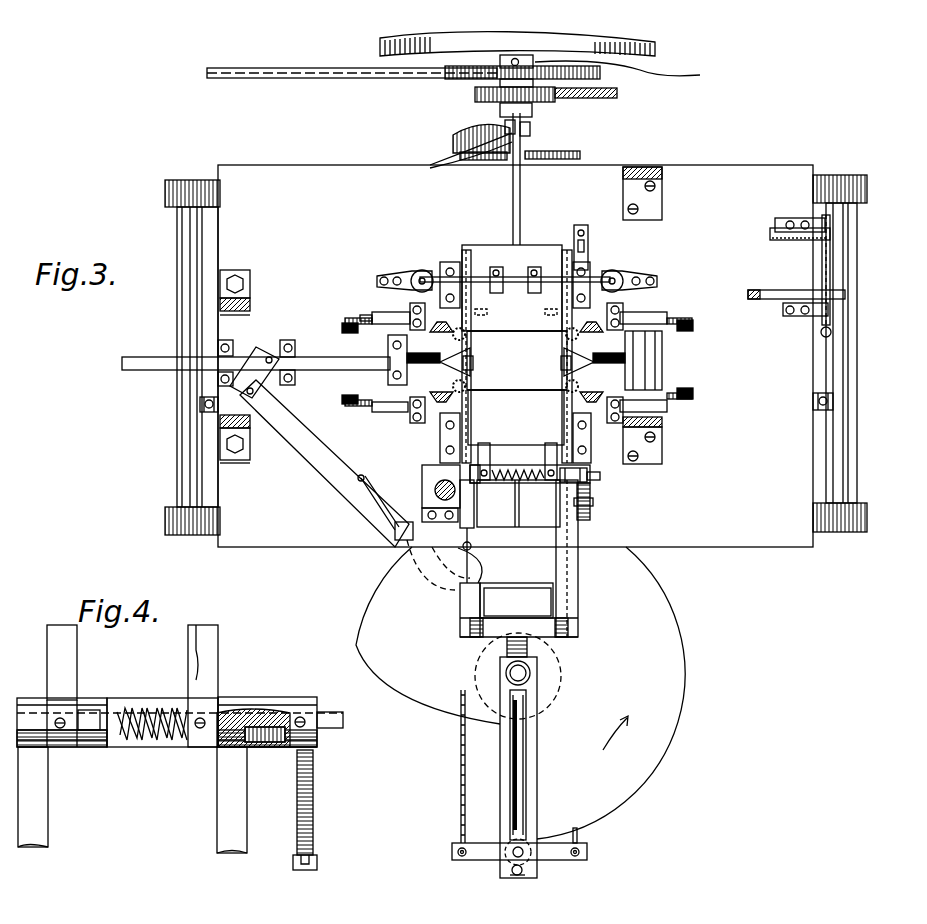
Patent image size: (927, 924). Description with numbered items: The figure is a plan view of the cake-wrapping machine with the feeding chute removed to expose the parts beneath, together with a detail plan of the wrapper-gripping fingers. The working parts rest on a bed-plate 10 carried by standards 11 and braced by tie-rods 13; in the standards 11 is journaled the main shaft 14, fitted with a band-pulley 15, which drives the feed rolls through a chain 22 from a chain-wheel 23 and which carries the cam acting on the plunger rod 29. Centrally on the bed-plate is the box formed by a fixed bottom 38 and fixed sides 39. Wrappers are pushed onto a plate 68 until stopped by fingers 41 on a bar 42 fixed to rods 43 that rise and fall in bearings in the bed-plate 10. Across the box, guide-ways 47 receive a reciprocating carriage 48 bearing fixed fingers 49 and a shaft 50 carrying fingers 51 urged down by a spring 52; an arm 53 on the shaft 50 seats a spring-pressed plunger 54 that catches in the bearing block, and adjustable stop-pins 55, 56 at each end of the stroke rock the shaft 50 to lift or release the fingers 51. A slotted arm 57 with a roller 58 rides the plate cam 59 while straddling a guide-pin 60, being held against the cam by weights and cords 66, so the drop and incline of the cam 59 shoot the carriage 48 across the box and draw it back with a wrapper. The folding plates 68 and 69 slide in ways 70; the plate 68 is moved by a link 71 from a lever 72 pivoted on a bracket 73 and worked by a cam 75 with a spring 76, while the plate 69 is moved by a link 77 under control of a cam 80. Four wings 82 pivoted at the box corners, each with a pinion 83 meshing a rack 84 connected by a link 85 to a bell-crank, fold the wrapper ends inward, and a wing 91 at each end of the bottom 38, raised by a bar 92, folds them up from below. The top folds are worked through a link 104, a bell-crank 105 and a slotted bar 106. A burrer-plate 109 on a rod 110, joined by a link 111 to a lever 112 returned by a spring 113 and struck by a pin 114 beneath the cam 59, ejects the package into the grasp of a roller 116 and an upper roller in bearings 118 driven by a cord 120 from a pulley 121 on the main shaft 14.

In FIG. 3, the bed-plate 10 is at (515, 356).
In FIG. 3, the standards 11 is at (201, 185).
In FIG. 3, the tie-rods 13 is at (192, 232).
In FIG. 3, the main shaft 14 is at (631, 73).
In FIG. 3, the band-pulley 15 is at (655, 48).
In FIG. 3, the chain 22 is at (288, 78).
In FIG. 3, the chain-wheel 23 is at (460, 78).
In FIG. 3, the rod 29 is at (435, 490).
In FIG. 3, the fixed bottom 38 is at (517, 360).
In FIG. 3, the fixed sides 39 is at (490, 333).
In FIG. 3, the fingers 41 is at (531, 290).
In FIG. 3, the bar 42 is at (482, 275).
In FIG. 3, the rods 43 is at (422, 276).
In FIG. 3, the guide-ways 47 is at (462, 603).
In FIG. 3, the frame or carriage 48 is at (516, 600).
In FIG. 4, the fixed fingers 49 is at (192, 637).
In FIG. 3, the shaft 50 is at (594, 476).
In FIG. 4, the shaft 50 is at (330, 712).
In FIG. 3, the fingers 51 is at (492, 449).
In FIG. 4, the fingers 51 is at (226, 660).
In FIG. 3, the spring 52 is at (506, 482).
In FIG. 4, the spring 52 is at (162, 742).
In FIG. 3, the arm 53 is at (590, 482).
In FIG. 4, the arm 53 is at (318, 750).
In FIG. 4, the spring pressed plunger 54 is at (258, 748).
In FIG. 3, the adjustable stop-pin 55 is at (590, 506).
In FIG. 4, the adjustable stop-pin 55 is at (298, 816).
In FIG. 3, the adjustable stop-pin 56 is at (588, 255).
In FIG. 3, the arm 57 is at (505, 763).
In FIG. 3, the roller 58 is at (516, 840).
In FIG. 3, the cam 59 is at (684, 683).
In FIG. 3, the guide-pin 60 is at (530, 672).
In FIG. 3, the cords 66 is at (460, 794).
In FIG. 3, the plate 68 is at (512, 288).
In FIG. 3, the plate 69 is at (516, 417).
In FIG. 3, the ways 70 is at (461, 268).
In FIG. 3, the link 71 is at (522, 187).
In FIG. 3, the lever 72 is at (530, 130).
In FIG. 3, the bracket 73 is at (507, 160).
In FIG. 3, the cam 75 is at (455, 136).
In FIG. 3, the spring 76 is at (445, 160).
In FIG. 3, the link 77 is at (519, 488).
In FIG. 3, the cam 80 is at (500, 683).
In FIG. 3, the wings 82 is at (442, 328).
In FIG. 3, the pinion 83 is at (514, 360).
In FIG. 3, the rack 84 is at (372, 314).
In FIG. 3, the link 85 is at (343, 326).
In FIG. 3, the wing 91 is at (466, 365).
In FIG. 3, the bar 92 is at (396, 372).
In FIG. 3, the link 104 is at (774, 290).
In FIG. 3, the bell-crank 105 is at (822, 260).
In FIG. 3, the bar 106 is at (780, 222).
In FIG. 3, the burrer-plate 109 is at (384, 359).
In FIG. 3, the rod 110 is at (335, 366).
In FIG. 3, the link 111 is at (265, 378).
In FIG. 3, the lever 112 is at (292, 440).
In FIG. 3, the spring 113 is at (365, 484).
In FIG. 3, the pin 114 is at (463, 547).
In FIG. 3, the roller 116 is at (645, 372).
In FIG. 3, the bearings 118 is at (663, 177).
In FIG. 3, the cord 120 is at (600, 90).
In FIG. 3, the pulley 121 is at (548, 95).